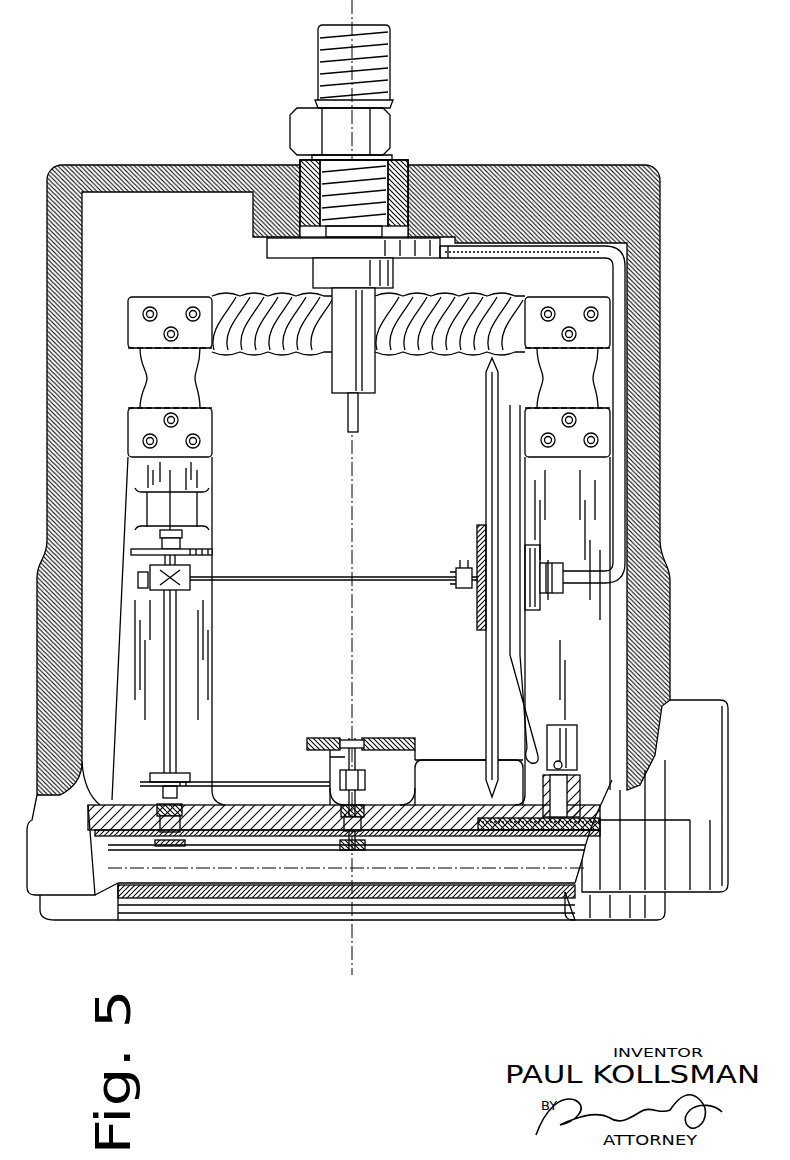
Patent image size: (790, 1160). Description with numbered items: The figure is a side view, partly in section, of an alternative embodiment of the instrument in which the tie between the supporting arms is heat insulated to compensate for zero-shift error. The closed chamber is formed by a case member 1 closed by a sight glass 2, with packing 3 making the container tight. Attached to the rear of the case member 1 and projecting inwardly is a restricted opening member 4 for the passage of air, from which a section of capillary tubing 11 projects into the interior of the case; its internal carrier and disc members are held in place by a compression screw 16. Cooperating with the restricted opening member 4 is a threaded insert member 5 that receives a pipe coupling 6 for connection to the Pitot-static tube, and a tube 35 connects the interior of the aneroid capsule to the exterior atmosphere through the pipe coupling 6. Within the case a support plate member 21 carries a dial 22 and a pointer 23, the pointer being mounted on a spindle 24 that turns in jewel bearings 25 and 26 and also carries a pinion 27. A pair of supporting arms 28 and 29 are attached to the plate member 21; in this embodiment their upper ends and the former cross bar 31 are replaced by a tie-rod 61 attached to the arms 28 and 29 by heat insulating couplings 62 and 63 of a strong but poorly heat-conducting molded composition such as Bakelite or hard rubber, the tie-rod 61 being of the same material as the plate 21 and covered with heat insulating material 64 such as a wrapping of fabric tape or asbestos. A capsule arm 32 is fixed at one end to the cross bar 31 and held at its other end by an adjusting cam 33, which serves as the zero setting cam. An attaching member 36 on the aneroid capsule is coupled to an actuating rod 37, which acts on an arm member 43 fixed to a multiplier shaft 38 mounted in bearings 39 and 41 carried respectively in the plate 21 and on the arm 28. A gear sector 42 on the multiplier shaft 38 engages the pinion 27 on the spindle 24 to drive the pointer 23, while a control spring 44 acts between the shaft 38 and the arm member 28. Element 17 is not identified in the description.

The case member 1 is at (540, 165).
The sight glass 2 is at (473, 905).
The packing 3 is at (218, 912).
The restricted opening member 4 is at (323, 278).
The threaded insert member 5 is at (410, 160).
The pipe coupling 6 is at (405, 118).
The capillary tubing 11 is at (348, 425).
The compression screw 16 is at (568, 783).
The plate 17 is at (535, 830).
The support plate member 21 is at (448, 806).
The dial 22 is at (502, 830).
The pointer 23 is at (466, 838).
The spindle 24 is at (345, 760).
The jewel bearing 25 is at (355, 740).
The jewel bearing 26 is at (366, 806).
The pinion 27 is at (365, 783).
The supporting arm 28 is at (208, 668).
The supporting arm 29 is at (615, 625).
The cross bar 31 is at (487, 715).
The capsule arm 32 is at (520, 610).
The adjusting cam 33 is at (577, 730).
The tube 35 is at (612, 262).
The attaching member 36 is at (465, 577).
The actuating rod 37 is at (296, 577).
The multiplier shaft 38 is at (168, 672).
The bearing 39 is at (163, 810).
The bearing 41 is at (160, 530).
The gear sector 42 is at (265, 782).
The arm member 43 is at (180, 580).
The control spring 44 is at (207, 551).
The tie-rod 61 is at (528, 257).
The heat insulating coupling 62 is at (162, 378).
The heat insulating coupling 63 is at (553, 375).
The heat insulating material 64 is at (452, 352).